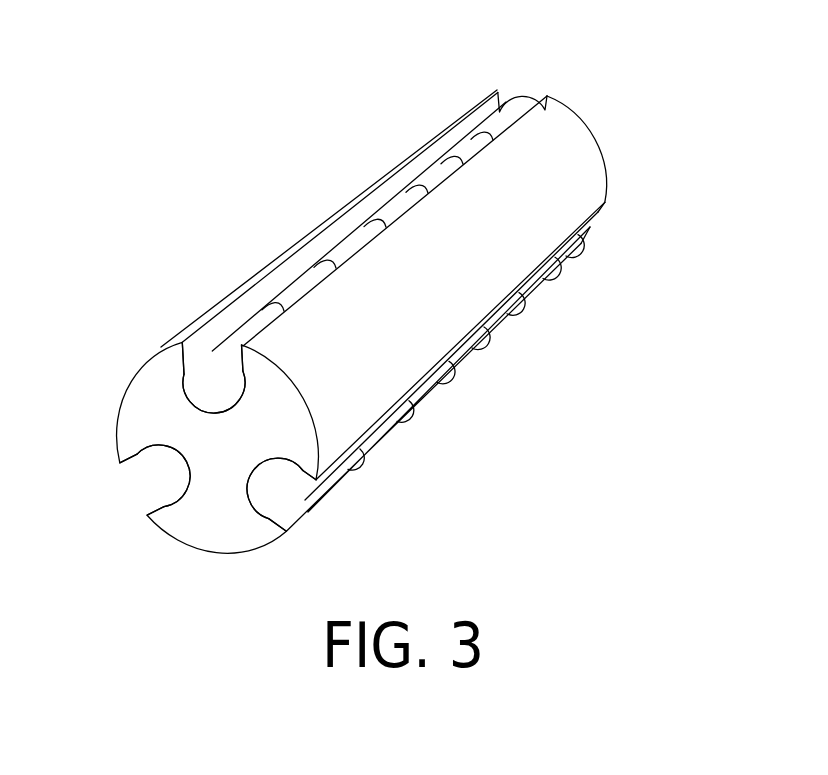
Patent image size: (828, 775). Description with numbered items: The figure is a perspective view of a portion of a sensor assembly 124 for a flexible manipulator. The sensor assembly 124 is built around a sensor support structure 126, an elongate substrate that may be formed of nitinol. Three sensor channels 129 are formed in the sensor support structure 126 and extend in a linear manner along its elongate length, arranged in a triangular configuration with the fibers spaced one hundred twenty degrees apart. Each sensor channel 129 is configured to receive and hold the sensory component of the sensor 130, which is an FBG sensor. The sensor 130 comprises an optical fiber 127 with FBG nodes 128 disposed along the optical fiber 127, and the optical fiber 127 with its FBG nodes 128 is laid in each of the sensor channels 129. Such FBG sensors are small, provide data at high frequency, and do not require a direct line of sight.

The sensor assembly 124 is at (156, 130).
The sensor support structure 126 is at (586, 153).
The optical fiber 127 is at (510, 100).
The FBG nodes 128 is at (468, 157).
The sensor channels 129 is at (202, 364).
The sensor 130 is at (460, 77).